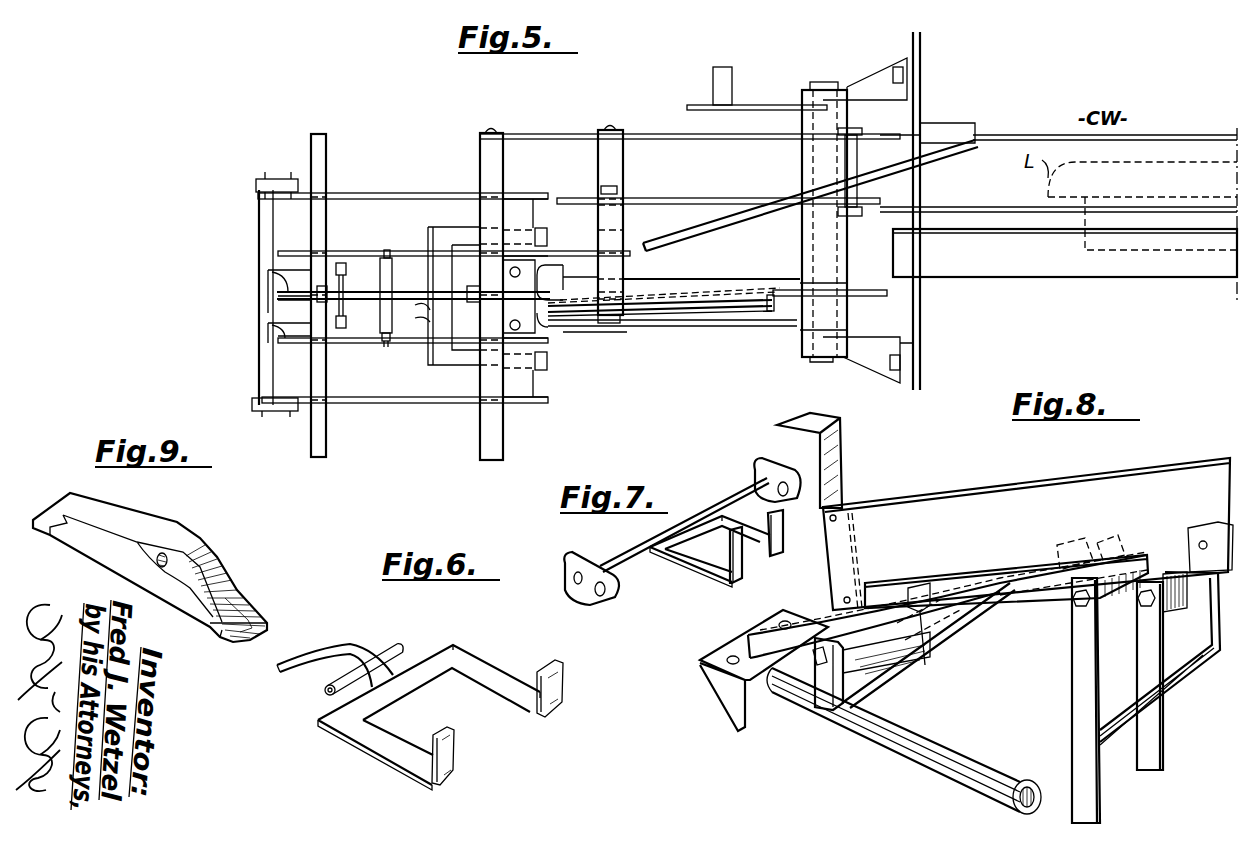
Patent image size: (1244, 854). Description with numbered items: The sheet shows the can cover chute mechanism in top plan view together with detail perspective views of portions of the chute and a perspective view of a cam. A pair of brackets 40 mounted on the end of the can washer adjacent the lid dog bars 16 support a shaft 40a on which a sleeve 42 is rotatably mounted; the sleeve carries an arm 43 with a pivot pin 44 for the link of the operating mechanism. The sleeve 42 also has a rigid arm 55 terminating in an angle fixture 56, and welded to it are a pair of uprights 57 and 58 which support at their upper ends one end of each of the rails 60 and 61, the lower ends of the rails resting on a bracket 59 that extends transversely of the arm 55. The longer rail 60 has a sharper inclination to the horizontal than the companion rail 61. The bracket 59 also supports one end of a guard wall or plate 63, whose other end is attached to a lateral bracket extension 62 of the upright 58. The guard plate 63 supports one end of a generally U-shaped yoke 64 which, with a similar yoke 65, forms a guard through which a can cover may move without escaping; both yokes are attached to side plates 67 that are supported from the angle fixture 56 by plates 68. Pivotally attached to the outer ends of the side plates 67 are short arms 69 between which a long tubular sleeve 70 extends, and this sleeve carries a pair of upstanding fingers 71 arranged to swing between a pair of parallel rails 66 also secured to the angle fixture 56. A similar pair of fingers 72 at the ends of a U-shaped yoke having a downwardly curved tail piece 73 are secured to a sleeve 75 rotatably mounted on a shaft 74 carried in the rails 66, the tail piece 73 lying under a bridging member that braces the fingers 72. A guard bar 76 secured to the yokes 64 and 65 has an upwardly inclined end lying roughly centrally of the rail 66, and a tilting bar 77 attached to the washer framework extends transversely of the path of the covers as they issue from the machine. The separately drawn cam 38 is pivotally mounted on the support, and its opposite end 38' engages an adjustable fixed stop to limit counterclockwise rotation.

In FIG. 5, the can lid-supporting reciprocable dog bars 16 is at (1070, 275).
In FIG. 9, the cam 38 is at (150, 567).
In FIG. 9, the opposite end of the cam 38' is at (261, 602).
In FIG. 5, the brackets 40 is at (847, 87).
In FIG. 5, the shaft 40a is at (825, 82).
In FIG. 5, the sleeve 42 is at (803, 255).
In FIG. 8, the sleeve 42 is at (1168, 694).
In FIG. 5, the arm 43 is at (750, 105).
In FIG. 8, the arm 43 is at (1072, 543).
In FIG. 5, the pivot pin 44 is at (727, 67).
In FIG. 8, the pivot pin 44 is at (1118, 537).
In FIG. 5, the rigid arm 55 is at (717, 327).
In FIG. 8, the rigid arm 55 is at (927, 758).
In FIG. 5, the angle fixture 56 is at (563, 332).
In FIG. 8, the angle fixture 56 is at (752, 728).
In FIG. 5, the upright 57 is at (862, 297).
In FIG. 8, the upright 57 is at (1072, 720).
In FIG. 5, the upright 58 is at (852, 218).
In FIG. 8, the upright 58 is at (1160, 770).
In FIG. 5, the bracket 59 is at (623, 198).
In FIG. 8, the bracket 59 is at (927, 660).
In FIG. 5, the rail 60 is at (650, 305).
In FIG. 8, the rail 60 is at (998, 615).
In FIG. 5, the rail 61 is at (730, 198).
In FIG. 8, the rail 61 is at (910, 584).
In FIG. 5, the lateral bracket extension 62 is at (867, 187).
In FIG. 8, the lateral bracket extension 62 is at (1203, 525).
In FIG. 5, the guard wall or plate 63 is at (662, 134).
In FIG. 8, the guard wall or plate 63 is at (1158, 466).
In FIG. 5, the U-shaped yoke 64 is at (500, 441).
In FIG. 8, the U-shaped yoke 64 is at (842, 456).
In FIG. 5, the yoke 65 is at (328, 450).
In FIG. 5, the rails 66 is at (268, 272).
In FIG. 5, the side plates 67 is at (368, 194).
In FIG. 5, the plates 68 is at (520, 198).
In FIG. 5, the short arms 69 is at (283, 180).
In FIG. 7, the short arms 69 is at (762, 458).
In FIG. 5, the tubular sleeve 70 is at (259, 337).
In FIG. 7, the tubular sleeve 70 is at (614, 550).
In FIG. 5, the upstanding fingers 71 is at (346, 263).
In FIG. 7, the upstanding fingers 71 is at (770, 514).
In FIG. 5, the fingers 72 is at (547, 236).
In FIG. 6, the fingers 72 is at (455, 747).
In FIG. 5, the tail piece 73 is at (413, 306).
In FIG. 6, the tail piece 73 is at (293, 672).
In FIG. 5, the shaft 74 is at (385, 348).
In FIG. 5, the sleeve 75 is at (388, 256).
In FIG. 6, the sleeve 75 is at (400, 650).
In FIG. 5, the guard bar 76 is at (770, 312).
In FIG. 5, the tilting bar 77 is at (740, 214).